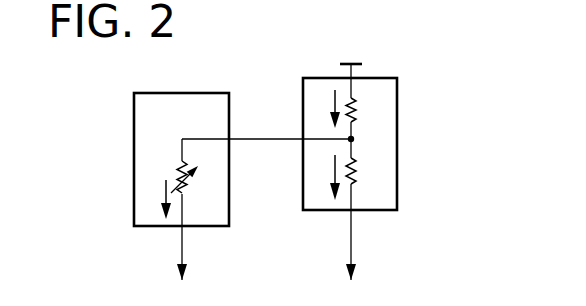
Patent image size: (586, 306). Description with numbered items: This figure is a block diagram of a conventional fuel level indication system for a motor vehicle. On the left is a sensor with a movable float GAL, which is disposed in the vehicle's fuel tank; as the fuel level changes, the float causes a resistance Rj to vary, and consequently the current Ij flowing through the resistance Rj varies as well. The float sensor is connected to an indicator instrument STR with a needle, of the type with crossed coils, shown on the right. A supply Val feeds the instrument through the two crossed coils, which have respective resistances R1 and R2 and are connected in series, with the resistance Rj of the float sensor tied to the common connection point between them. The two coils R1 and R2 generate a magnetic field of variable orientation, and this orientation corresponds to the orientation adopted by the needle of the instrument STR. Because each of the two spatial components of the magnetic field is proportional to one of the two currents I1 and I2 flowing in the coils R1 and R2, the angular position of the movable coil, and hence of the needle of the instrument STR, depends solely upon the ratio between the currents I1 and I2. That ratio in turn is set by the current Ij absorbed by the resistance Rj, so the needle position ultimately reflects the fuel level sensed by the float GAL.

The sensor with a movable float GAL is at (133, 122).
The resistance Rj is at (183, 170).
The current Ij is at (163, 190).
The indicator instrument STR is at (383, 212).
The supply voltage Val is at (360, 62).
The resistance of first crossed coil R1 is at (356, 108).
The resistance of second crossed coil R2 is at (356, 178).
The current I1 is at (333, 98).
The current I2 is at (333, 172).